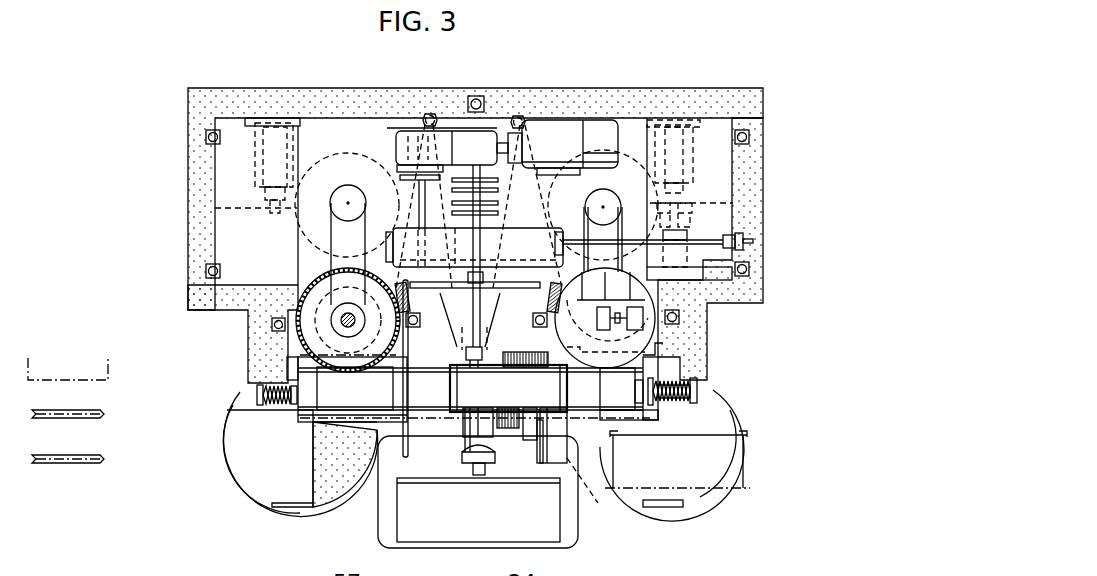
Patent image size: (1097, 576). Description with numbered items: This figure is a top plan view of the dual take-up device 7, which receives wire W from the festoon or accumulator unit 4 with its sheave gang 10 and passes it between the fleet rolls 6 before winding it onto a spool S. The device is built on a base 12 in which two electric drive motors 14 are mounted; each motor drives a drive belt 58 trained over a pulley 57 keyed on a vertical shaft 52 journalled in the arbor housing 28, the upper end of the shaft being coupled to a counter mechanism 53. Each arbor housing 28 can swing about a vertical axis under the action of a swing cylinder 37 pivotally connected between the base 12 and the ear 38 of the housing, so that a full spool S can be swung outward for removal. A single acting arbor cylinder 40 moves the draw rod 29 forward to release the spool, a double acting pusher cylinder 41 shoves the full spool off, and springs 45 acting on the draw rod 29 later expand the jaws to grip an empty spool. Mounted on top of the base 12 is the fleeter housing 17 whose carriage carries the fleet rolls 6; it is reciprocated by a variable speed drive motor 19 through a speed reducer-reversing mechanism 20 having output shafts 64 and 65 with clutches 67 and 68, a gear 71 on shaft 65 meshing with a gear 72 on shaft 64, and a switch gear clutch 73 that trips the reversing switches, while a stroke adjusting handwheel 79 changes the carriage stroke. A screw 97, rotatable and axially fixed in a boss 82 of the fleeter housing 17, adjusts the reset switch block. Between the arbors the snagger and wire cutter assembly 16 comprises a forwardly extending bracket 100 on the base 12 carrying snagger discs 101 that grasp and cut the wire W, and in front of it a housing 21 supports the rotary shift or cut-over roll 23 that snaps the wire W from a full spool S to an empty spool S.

The festoon or accumulator unit 4 is at (112, 358).
The fleet rolls 6 is at (548, 440).
The dual take-up device 7 is at (253, 500).
The sheave gang 10 is at (104, 414).
The base 12 is at (276, 118).
The electric drive motor 14 is at (334, 150).
The snagger and wire cutter assembly 16 is at (470, 436).
The fleeter housing 17 is at (622, 400).
The variable speed drive motor 19 is at (601, 122).
The speed reducer-reversing mechanism 20 is at (398, 130).
The housing 21 is at (402, 500).
The rotary shift or cut-over roll 23 is at (474, 445).
The arbor housing 28 is at (300, 360).
The draw rod 29 is at (240, 392).
The swing cylinder 37 is at (425, 118).
The ear 38 is at (405, 300).
The arbor cylinder 40 is at (684, 150).
The pusher cylinder 41 is at (690, 172).
The springs 45 is at (276, 406).
The vertical shaft 52 is at (347, 389).
The counter mechanism 53 is at (628, 334).
The pulley 57 is at (340, 316).
The drive belt 58 is at (333, 232).
The output shaft 64 is at (498, 216).
The output shaft 65 is at (420, 195).
The clutch 67 is at (447, 127).
The clutch 68 is at (398, 168).
The gear 71 is at (401, 235).
The gear 72 is at (475, 262).
The switch gear clutch 73 is at (474, 247).
The stroke adjusting handwheel 79 is at (740, 238).
The boss 82 is at (642, 376).
The screw 97 is at (672, 372).
The bracket 100 is at (452, 326).
The snagger disc 101 is at (486, 463).
The spool S is at (405, 447).
The wire W is at (510, 430).